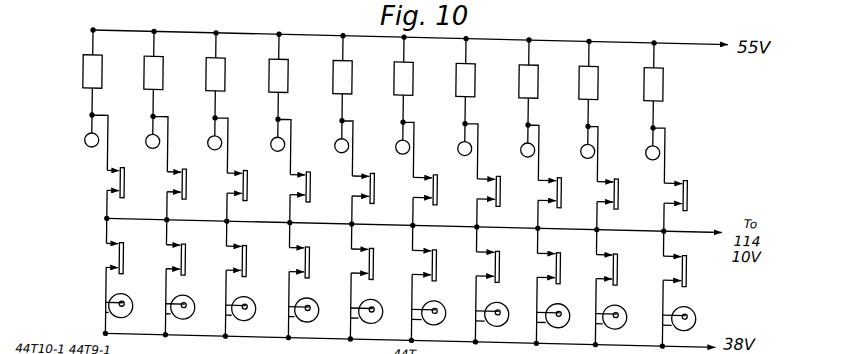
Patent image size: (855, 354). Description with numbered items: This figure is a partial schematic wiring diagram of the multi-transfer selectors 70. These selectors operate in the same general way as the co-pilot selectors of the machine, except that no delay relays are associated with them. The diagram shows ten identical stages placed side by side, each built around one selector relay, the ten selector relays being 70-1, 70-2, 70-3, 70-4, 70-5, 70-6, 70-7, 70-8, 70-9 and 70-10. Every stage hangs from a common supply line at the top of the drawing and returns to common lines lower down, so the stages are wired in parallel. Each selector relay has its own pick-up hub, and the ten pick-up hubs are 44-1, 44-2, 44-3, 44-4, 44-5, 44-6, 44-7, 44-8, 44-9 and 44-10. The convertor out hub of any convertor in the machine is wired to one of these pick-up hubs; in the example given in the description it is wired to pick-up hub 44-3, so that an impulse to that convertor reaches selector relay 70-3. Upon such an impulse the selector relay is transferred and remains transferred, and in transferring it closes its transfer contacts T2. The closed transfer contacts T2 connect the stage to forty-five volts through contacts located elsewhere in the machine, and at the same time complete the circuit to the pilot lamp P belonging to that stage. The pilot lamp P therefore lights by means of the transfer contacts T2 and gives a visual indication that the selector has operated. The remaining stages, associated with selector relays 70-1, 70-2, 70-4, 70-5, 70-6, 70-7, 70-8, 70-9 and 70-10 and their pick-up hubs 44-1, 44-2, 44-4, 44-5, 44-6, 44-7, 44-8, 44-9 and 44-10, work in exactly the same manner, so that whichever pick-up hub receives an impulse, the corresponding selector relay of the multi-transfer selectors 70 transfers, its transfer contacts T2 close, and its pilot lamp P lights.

The selector relay 70-1 is at (644, 63).
The selector relay 70-2 is at (578, 63).
The selector relay 70-3 is at (518, 63).
The selector relay 70-4 is at (456, 63).
The selector relay 70-5 is at (394, 63).
The selector relay 70-6 is at (332, 63).
The selector relay 70-7 is at (268, 63).
The selector relay 70-8 is at (206, 63).
The selector relay 70-9 is at (144, 63).
The selector relay 70-10 is at (82, 63).
The pick-up hub 44-1 is at (647, 138).
The pick-up hub 44-2 is at (582, 138).
The pick-up hub 44-3 is at (522, 138).
The pick-up hub 44-4 is at (459, 138).
The pick-up hub 44-5 is at (397, 138).
The pick-up hub 44-6 is at (336, 138).
The pick-up hub 44-7 is at (272, 138).
The pick-up hub 44-8 is at (209, 138).
The pick-up hub 44-9 is at (147, 138).
The pick-up hub 44-10 is at (86, 138).
The multi-transfer selectors 70 is at (674, 76).
The transfer contacts T2 is at (701, 179).
The pilot lamp P is at (705, 302).